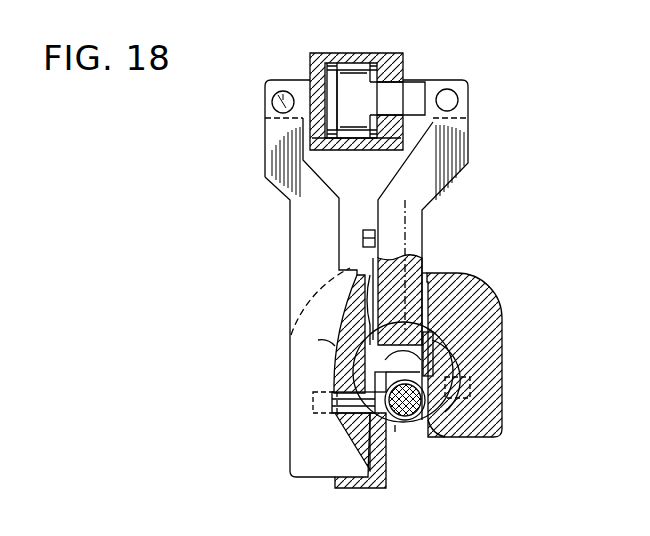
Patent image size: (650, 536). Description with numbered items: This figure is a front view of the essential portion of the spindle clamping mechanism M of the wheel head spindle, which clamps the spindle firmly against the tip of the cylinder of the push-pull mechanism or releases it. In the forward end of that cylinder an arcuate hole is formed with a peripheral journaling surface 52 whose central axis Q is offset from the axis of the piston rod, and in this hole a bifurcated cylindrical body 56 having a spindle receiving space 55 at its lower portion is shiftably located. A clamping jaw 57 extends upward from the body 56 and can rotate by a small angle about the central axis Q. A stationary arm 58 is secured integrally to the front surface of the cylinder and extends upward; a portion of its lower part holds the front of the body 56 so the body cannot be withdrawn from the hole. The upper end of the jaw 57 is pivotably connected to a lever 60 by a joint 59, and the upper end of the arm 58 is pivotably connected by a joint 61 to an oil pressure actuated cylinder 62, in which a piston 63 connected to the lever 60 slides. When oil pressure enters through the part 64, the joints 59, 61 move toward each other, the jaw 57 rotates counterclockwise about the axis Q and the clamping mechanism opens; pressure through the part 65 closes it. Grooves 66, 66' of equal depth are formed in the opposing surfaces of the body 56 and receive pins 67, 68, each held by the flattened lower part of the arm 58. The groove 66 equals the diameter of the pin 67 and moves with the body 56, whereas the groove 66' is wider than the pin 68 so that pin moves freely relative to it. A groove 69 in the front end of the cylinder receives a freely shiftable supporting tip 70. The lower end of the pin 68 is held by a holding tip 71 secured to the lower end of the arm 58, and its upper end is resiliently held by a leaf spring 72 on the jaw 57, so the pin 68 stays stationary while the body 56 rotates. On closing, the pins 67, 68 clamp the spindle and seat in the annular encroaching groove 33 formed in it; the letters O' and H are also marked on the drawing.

The stationary arm 58 is at (298, 205).
The oil pressure actuated cylinder 62 is at (313, 66).
The piston 63 is at (357, 145).
The lever 60 is at (413, 88).
The part 65 is at (332, 62).
The part 64 is at (373, 60).
The joint 61 is at (278, 100).
The joint 59 is at (458, 100).
The clamping jaw 57 is at (415, 227).
The leaf spring 72 is at (372, 250).
The annular encroaching groove 33 is at (417, 423).
The spindle receiving space 55 is at (422, 426).
The groove 66 is at (462, 355).
The peripheral journaling surface 52 is at (457, 362).
The bifurcated cylindrical body 56 is at (452, 372).
The pin 67 is at (438, 418).
The groove 66' is at (330, 329).
The groove 69 is at (375, 380).
The supporting tip 70 is at (338, 413).
The pin 68 is at (380, 423).
The holding tip 71 is at (383, 488).
The spindle clamping mechanism M is at (318, 341).
The central axis Q is at (403, 345).
The center O' is at (399, 442).
The region H is at (467, 391).